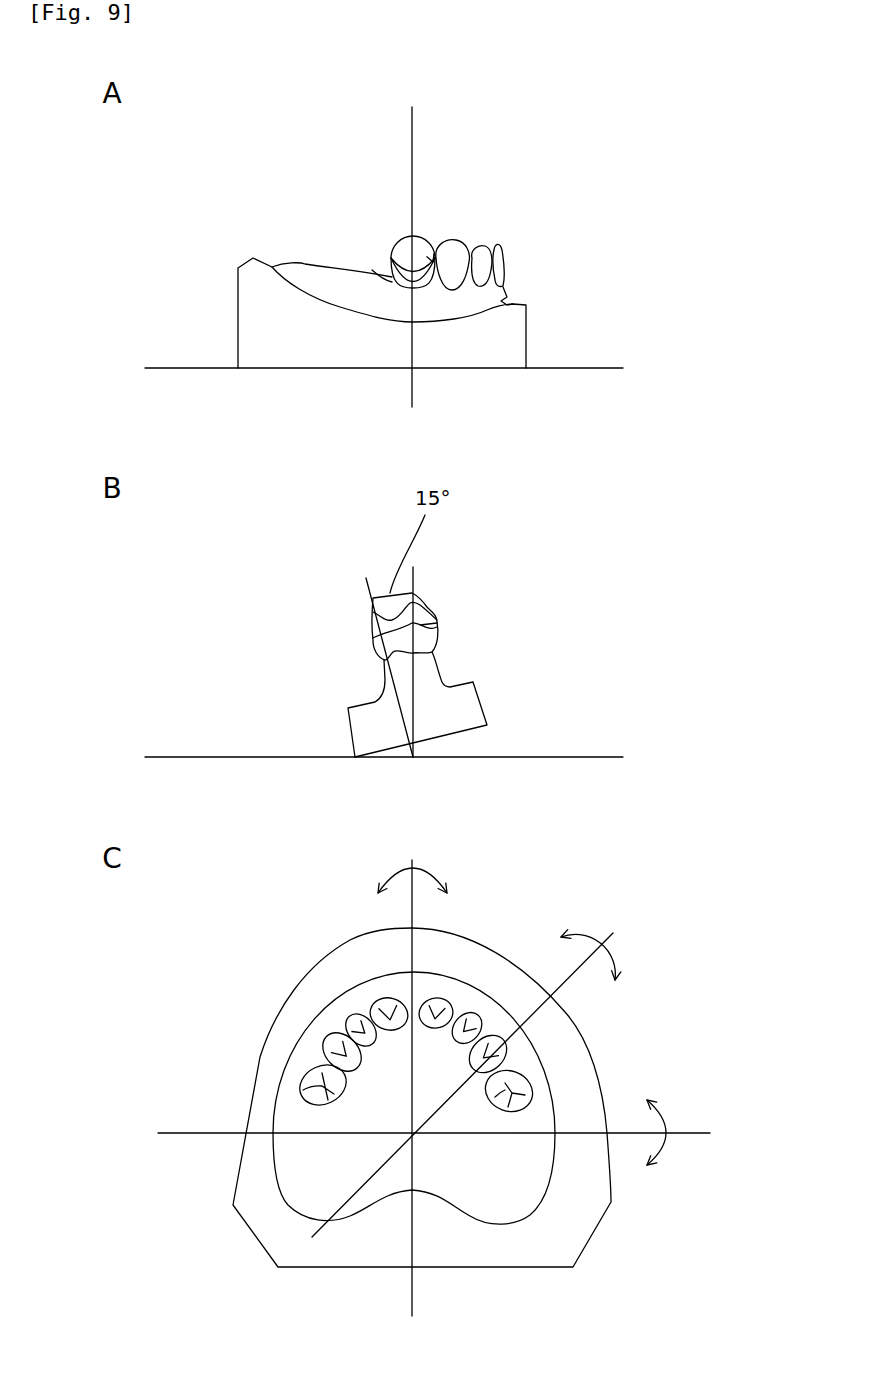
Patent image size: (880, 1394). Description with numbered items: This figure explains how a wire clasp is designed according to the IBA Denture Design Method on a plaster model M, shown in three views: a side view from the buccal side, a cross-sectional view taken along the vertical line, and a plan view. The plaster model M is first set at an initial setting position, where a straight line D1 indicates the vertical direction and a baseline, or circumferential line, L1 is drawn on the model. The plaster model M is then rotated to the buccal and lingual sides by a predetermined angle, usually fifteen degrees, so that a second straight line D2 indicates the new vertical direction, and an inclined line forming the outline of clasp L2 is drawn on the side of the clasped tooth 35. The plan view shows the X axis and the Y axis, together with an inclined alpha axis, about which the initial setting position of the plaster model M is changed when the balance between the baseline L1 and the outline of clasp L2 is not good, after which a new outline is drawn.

The clasped tooth 35 is at (400, 233).
The plaster model M is at (317, 283).
The straight line indicating a vertical direction D1 is at (410, 132).
The straight line indicating a vertical direction D2 is at (415, 578).
The baseline (circumferential line) L1 is at (432, 260).
The inclined line (outline of clasp) L2 is at (392, 282).
The X axis X is at (412, 1072).
The Y axis Y is at (448, 1132).